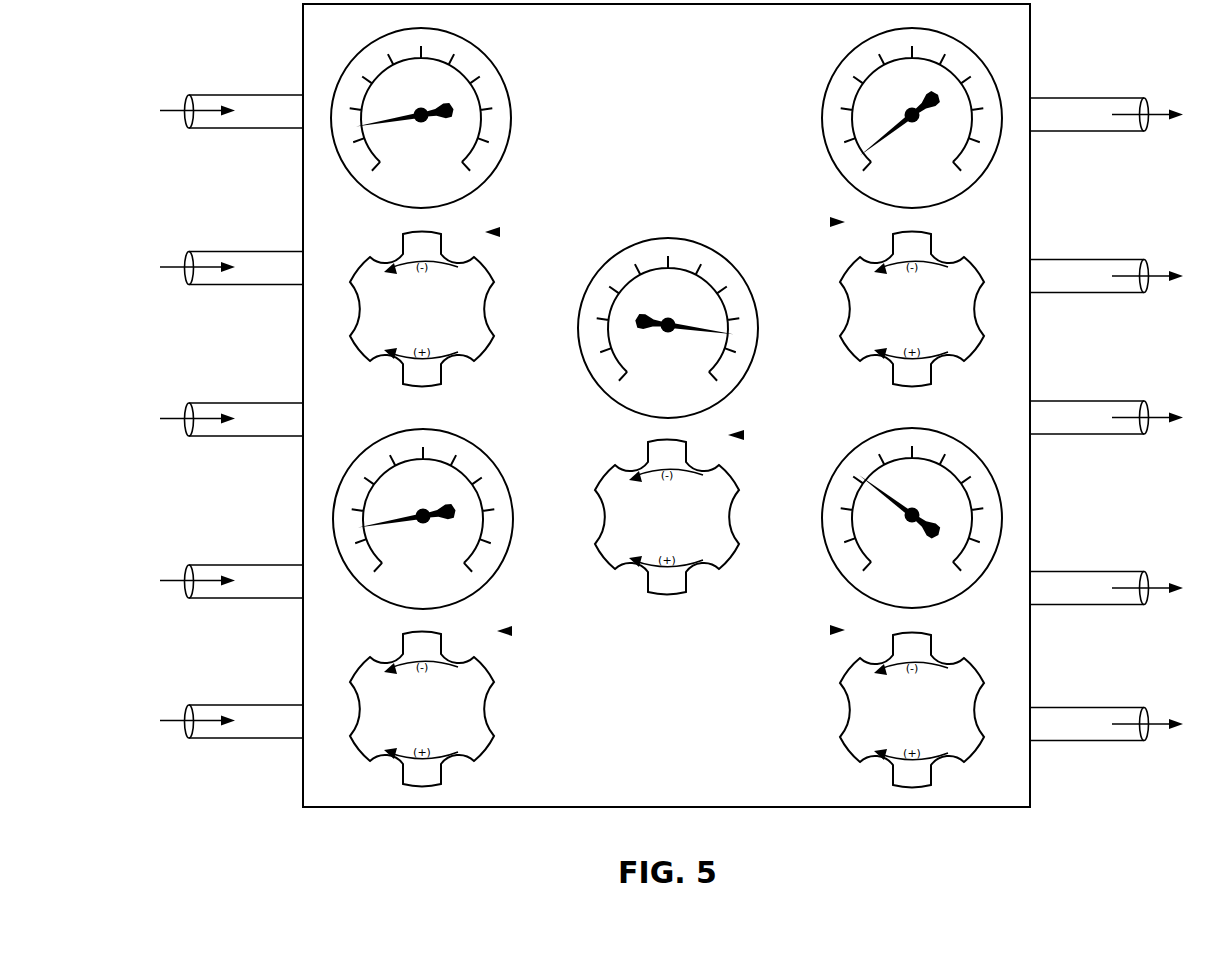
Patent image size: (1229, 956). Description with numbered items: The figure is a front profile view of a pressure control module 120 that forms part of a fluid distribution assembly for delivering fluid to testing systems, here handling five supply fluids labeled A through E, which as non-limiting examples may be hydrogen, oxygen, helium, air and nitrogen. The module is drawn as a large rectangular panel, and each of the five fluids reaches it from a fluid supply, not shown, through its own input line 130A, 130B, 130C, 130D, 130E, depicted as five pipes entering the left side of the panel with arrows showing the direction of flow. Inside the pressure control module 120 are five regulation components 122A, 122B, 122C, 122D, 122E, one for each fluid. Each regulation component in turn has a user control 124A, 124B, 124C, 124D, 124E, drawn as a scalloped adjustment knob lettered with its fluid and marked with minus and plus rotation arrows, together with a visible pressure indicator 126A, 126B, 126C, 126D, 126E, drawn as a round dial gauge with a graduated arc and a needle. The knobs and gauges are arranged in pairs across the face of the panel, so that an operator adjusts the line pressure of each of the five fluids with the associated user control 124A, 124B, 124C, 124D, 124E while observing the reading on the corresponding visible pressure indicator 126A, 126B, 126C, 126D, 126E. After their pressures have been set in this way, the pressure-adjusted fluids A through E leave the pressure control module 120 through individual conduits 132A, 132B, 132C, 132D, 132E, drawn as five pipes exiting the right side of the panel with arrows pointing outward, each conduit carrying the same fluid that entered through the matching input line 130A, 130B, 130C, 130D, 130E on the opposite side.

The pressure control module 120 is at (303, 22).
The regulation component 122A is at (500, 231).
The regulation component 122B is at (830, 221).
The regulation component 122C is at (745, 434).
The regulation component 122D is at (512, 630).
The regulation component 122E is at (830, 629).
The user control 124A is at (350, 336).
The user control 124B is at (984, 336).
The user control 124C is at (595, 545).
The user control 124D is at (494, 738).
The user control 124E is at (840, 738).
The visible pressure indicator 126A is at (485, 54).
The visible pressure indicator 126B is at (848, 54).
The visible pressure indicator 126C is at (600, 387).
The visible pressure indicator 126D is at (468, 441).
The visible pressure indicator 126E is at (922, 428).
The input line 130A is at (266, 128).
The input line 130B is at (266, 284).
The input line 130C is at (265, 436).
The input line 130D is at (258, 598).
The input line 130E is at (258, 738).
The conduit 132A is at (1079, 131).
The conduit 132B is at (1074, 292).
The conduit 132C is at (1074, 433).
The conduit 132D is at (1074, 604).
The conduit 132E is at (1070, 740).